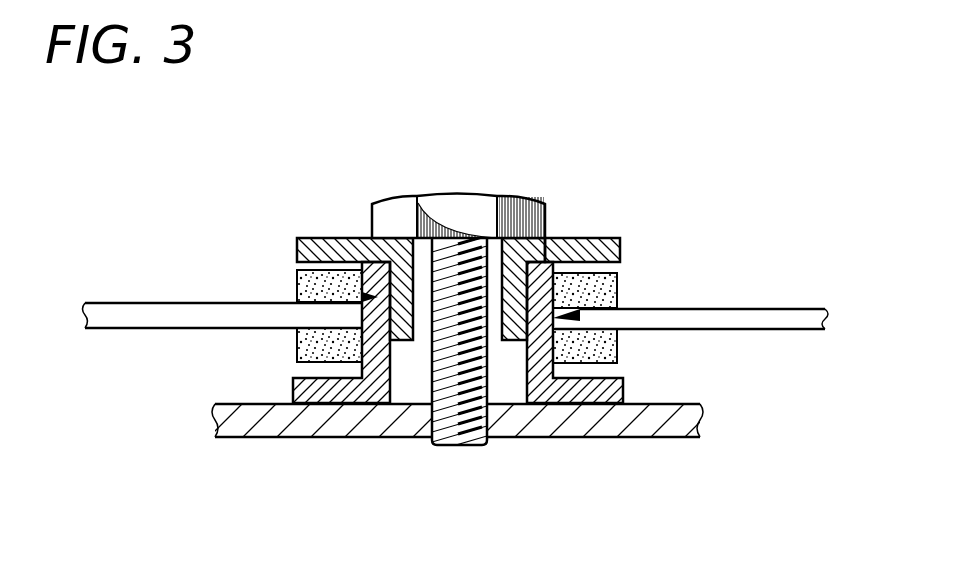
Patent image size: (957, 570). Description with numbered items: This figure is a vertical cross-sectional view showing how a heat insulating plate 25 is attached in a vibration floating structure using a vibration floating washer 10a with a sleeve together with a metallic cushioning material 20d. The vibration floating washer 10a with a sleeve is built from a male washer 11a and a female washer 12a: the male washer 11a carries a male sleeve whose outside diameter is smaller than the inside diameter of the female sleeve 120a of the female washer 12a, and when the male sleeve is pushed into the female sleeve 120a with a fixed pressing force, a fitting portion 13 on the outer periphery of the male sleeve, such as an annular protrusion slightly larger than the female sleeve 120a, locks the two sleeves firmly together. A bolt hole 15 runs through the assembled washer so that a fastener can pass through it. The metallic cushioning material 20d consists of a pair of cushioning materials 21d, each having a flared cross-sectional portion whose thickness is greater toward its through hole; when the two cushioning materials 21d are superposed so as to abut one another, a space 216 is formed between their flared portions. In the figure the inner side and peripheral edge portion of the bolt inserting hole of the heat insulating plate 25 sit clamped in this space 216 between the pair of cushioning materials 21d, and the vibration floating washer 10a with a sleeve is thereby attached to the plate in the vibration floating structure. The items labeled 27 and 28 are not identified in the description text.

The vibration floating washer with a sleeve 10a is at (693, 237).
The male washer 11a is at (613, 240).
The female washer 12a is at (627, 387).
The fitting portion 13 is at (362, 297).
The bolt hole 15 is at (353, 238).
The metallic cushioning material 20d is at (623, 276).
The cushioning material 21d is at (620, 293).
The heat insulating plate 25 is at (808, 308).
The nut 27 is at (463, 208).
The base plate 28 is at (668, 437).
The female sleeve 120a is at (527, 403).
The space 216 is at (552, 365).